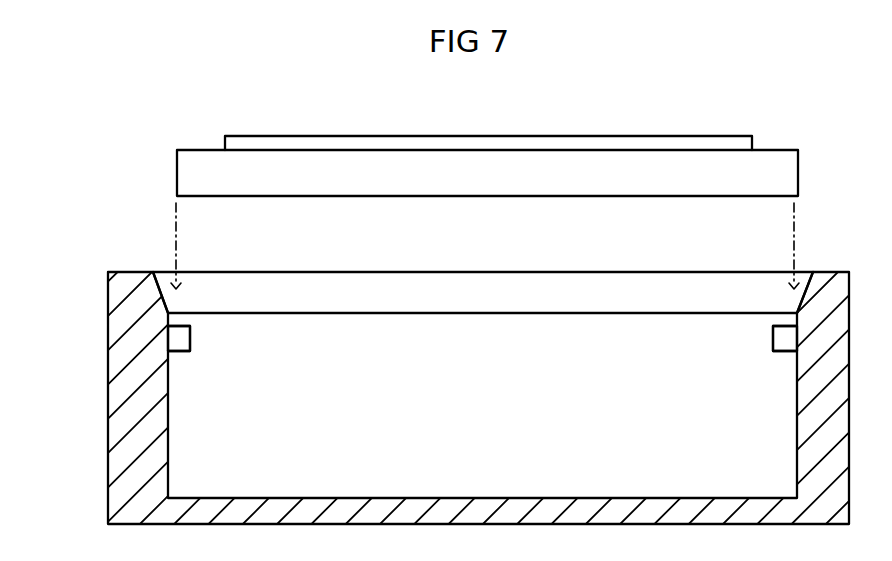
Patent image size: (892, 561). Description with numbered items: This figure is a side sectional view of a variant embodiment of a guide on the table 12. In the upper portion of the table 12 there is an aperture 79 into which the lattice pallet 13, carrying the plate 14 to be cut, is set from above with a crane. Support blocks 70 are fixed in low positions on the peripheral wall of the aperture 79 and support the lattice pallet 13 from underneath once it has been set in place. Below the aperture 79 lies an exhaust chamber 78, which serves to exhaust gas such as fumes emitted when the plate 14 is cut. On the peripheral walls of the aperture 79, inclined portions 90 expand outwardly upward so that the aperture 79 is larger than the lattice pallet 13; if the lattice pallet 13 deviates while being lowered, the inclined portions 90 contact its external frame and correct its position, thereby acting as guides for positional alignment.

The table 12 is at (108, 360).
The lattice pallet 13 is at (375, 157).
The plate 14 is at (500, 136).
The support block 70 is at (190, 337).
The exhaust chamber 78 is at (482, 424).
The aperture 79 is at (417, 286).
The inclined portion 90 is at (168, 288).